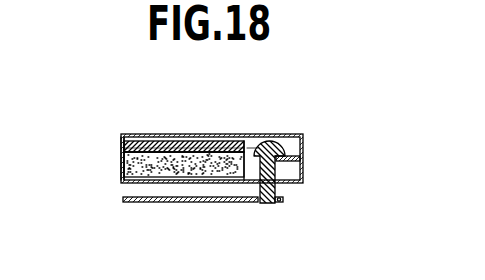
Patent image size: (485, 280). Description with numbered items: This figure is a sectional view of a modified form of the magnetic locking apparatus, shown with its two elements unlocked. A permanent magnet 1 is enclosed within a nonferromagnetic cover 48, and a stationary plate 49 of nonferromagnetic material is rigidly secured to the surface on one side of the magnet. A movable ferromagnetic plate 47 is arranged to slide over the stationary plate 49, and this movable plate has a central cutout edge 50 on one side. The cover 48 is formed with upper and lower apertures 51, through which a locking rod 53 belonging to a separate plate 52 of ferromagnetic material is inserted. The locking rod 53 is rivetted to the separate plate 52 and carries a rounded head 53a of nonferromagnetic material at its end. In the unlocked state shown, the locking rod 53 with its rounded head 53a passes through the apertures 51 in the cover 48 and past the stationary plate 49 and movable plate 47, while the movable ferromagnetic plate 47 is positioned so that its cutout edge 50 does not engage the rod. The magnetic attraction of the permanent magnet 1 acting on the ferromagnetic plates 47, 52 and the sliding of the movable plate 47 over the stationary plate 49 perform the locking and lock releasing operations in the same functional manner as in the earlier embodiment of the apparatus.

The permanent magnet 1 is at (137, 162).
The movable ferromagnetic plate 47 is at (147, 141).
The nonferromagnetic cover 48 is at (121, 150).
The stationary plate 49 is at (189, 148).
The central cutout edge 50 is at (239, 144).
The apertures 51 is at (286, 137).
The separate plate 52 is at (185, 202).
The locking rod 53 is at (275, 171).
The rounded head 53a is at (269, 141).